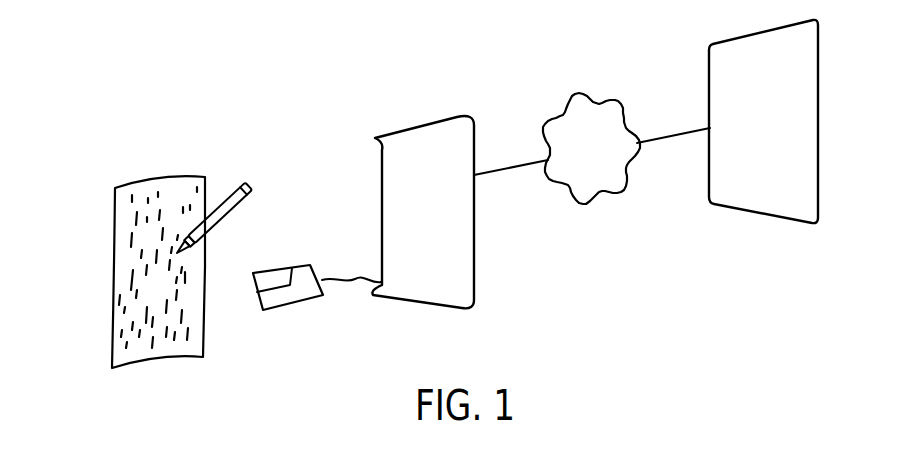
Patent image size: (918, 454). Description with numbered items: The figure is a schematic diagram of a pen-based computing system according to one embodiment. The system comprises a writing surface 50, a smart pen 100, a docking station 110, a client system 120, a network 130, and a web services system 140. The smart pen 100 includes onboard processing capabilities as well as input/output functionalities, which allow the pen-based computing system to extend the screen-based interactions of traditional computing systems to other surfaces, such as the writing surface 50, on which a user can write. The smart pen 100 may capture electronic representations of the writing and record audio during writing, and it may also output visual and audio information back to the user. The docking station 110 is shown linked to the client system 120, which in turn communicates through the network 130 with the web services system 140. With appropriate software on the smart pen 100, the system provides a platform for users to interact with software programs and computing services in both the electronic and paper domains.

The writing surface 50 is at (130, 263).
The smart pen 100 is at (235, 187).
The docking station 110 is at (306, 282).
The client system 120 is at (427, 155).
The network 130 is at (607, 161).
The web services system 140 is at (782, 169).